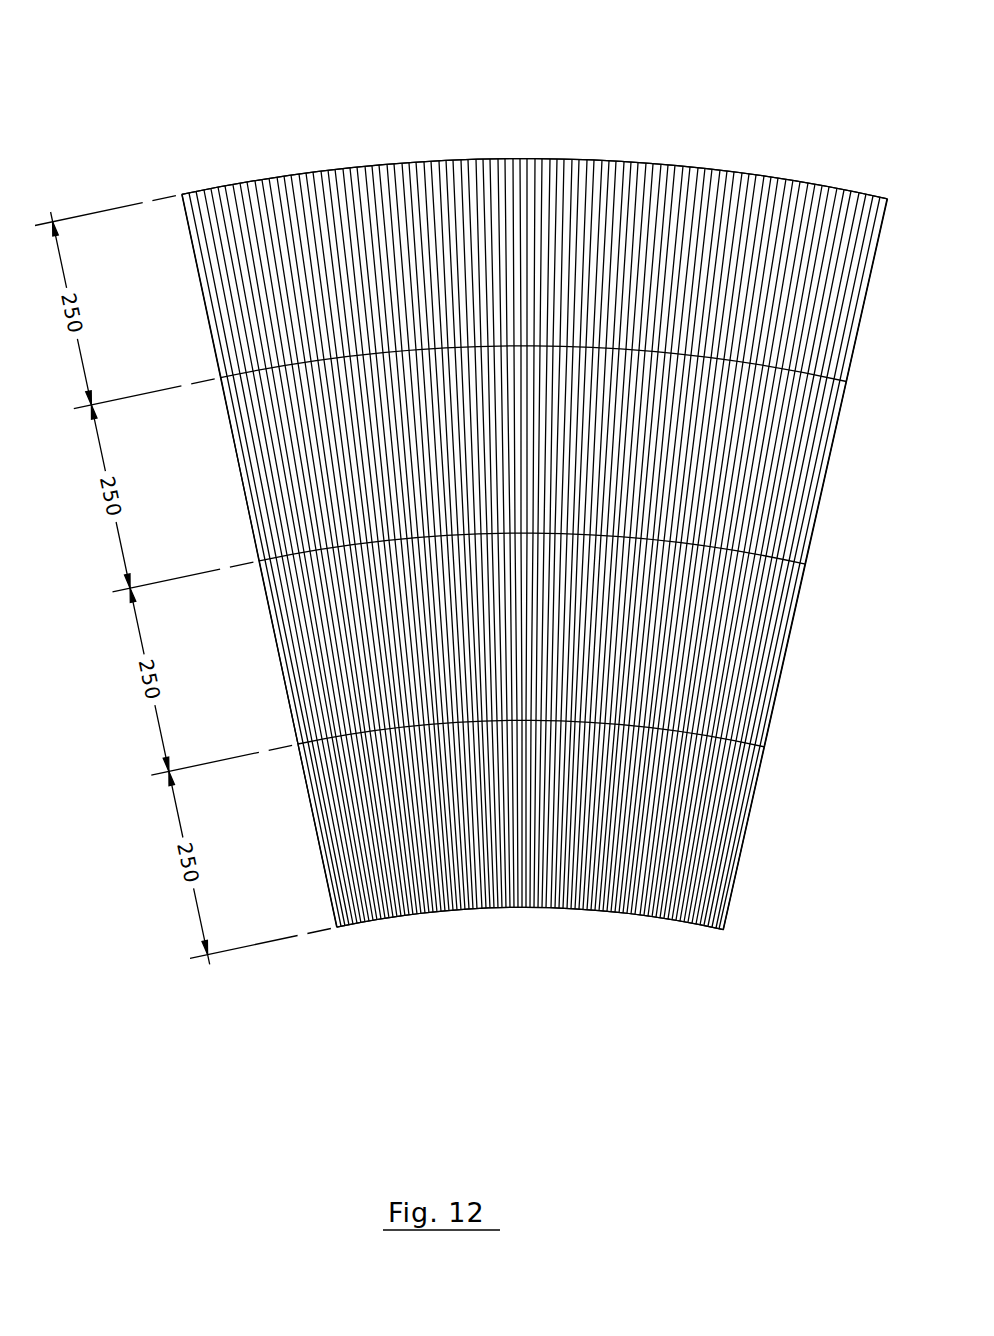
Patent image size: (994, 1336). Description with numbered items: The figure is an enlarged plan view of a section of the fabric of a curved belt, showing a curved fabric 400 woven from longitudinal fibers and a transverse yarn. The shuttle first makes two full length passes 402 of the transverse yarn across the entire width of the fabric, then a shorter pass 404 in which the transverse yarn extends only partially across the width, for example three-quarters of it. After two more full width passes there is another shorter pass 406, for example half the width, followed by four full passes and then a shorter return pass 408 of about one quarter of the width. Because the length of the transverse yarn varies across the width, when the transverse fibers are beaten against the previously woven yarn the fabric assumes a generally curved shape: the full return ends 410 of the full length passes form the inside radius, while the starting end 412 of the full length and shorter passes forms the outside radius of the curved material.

The curved fabric 400 is at (652, 118).
The full length passes 402 is at (327, 882).
The shorter pass 404 is at (305, 750).
The shorter pass 406 is at (290, 539).
The shorter return pass 408 is at (308, 345).
The full return ends 410 is at (362, 942).
The starting end 412 is at (497, 150).